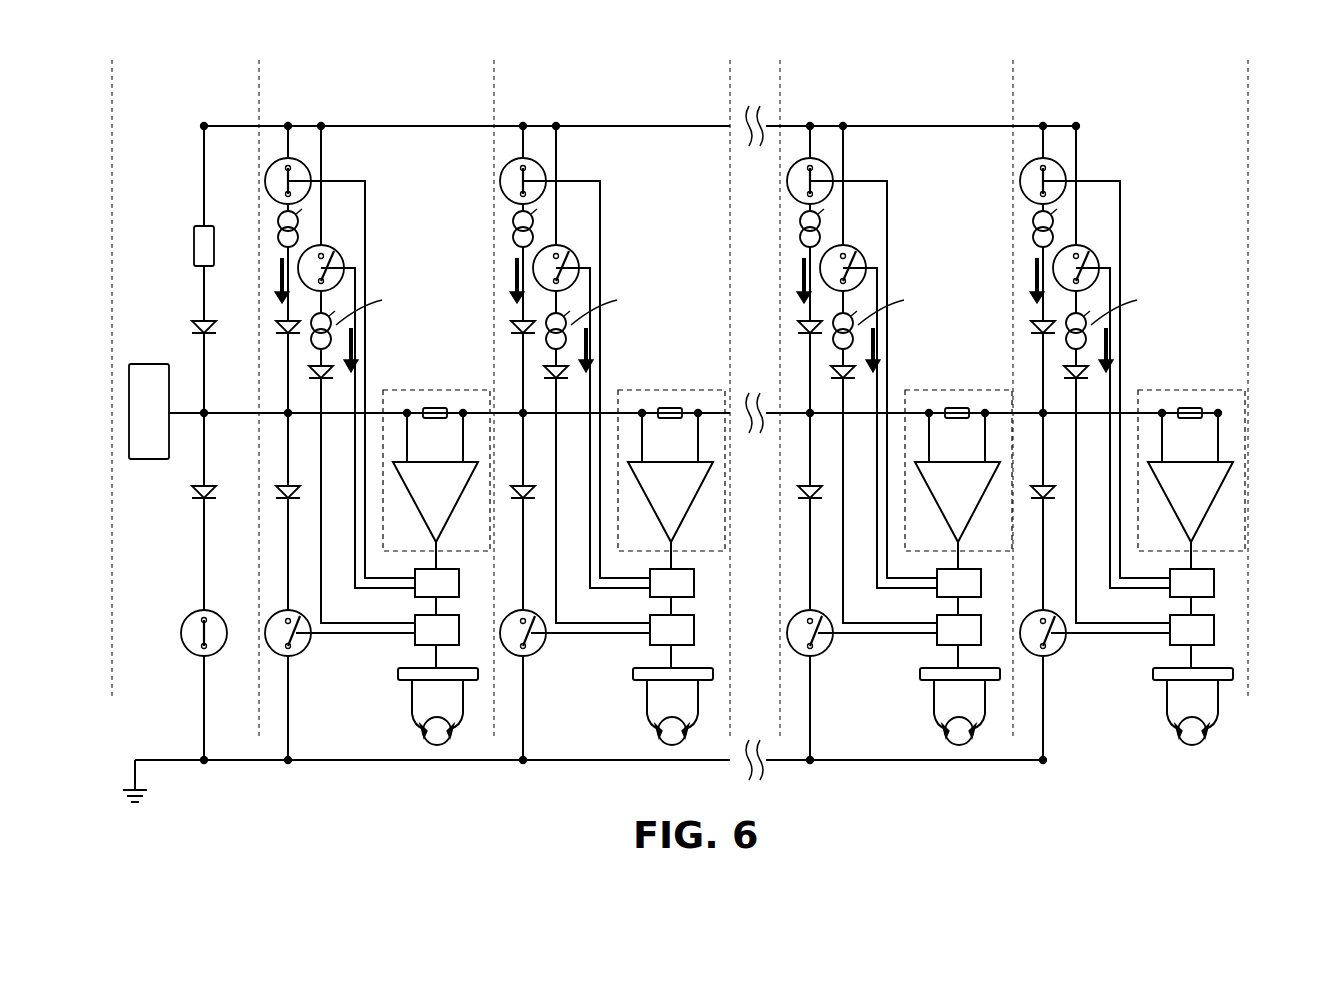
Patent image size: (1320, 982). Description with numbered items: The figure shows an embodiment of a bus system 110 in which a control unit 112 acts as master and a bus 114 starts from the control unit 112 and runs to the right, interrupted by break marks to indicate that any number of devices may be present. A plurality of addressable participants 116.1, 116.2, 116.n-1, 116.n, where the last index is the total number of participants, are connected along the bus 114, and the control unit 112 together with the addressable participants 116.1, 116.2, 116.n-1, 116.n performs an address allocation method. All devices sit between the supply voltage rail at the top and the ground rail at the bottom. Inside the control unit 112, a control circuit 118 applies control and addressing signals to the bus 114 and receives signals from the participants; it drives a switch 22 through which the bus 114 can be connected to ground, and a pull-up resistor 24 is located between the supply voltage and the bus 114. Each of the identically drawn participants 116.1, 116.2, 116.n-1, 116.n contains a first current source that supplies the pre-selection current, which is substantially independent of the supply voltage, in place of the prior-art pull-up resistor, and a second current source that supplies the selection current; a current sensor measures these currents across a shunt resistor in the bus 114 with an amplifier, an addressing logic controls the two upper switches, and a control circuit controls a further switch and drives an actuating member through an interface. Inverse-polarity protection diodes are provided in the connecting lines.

The bus system 110 is at (1262, 226).
The control unit 112 is at (178, 443).
The bus 114 is at (183, 413).
The addressable participant 116.1 is at (361, 444).
The addressable participant 116.2 is at (596, 444).
The addressable participant 116.n-1 is at (883, 444).
The addressable participant 116.n is at (1116, 444).
The control circuit 118 is at (152, 362).
The switch 22 is at (183, 640).
The pull-up resistor 24 is at (195, 243).